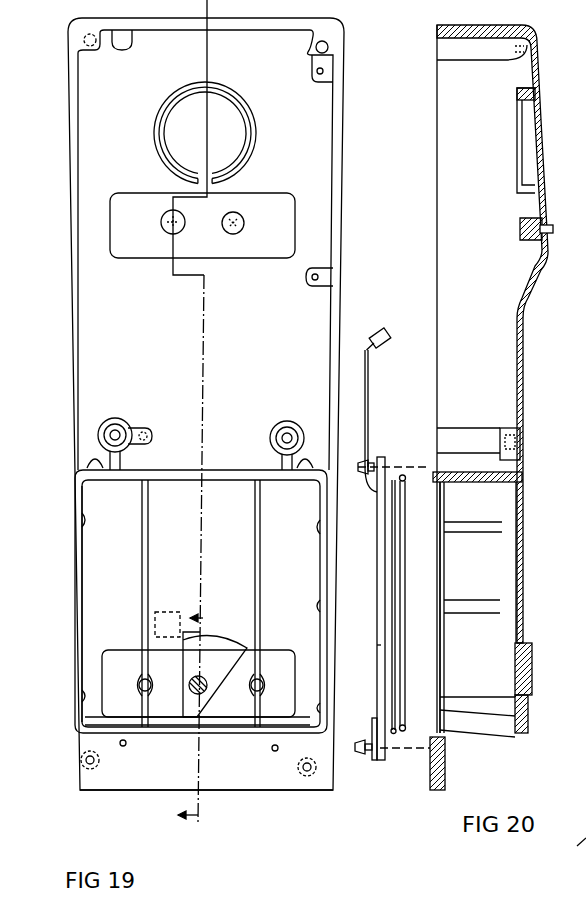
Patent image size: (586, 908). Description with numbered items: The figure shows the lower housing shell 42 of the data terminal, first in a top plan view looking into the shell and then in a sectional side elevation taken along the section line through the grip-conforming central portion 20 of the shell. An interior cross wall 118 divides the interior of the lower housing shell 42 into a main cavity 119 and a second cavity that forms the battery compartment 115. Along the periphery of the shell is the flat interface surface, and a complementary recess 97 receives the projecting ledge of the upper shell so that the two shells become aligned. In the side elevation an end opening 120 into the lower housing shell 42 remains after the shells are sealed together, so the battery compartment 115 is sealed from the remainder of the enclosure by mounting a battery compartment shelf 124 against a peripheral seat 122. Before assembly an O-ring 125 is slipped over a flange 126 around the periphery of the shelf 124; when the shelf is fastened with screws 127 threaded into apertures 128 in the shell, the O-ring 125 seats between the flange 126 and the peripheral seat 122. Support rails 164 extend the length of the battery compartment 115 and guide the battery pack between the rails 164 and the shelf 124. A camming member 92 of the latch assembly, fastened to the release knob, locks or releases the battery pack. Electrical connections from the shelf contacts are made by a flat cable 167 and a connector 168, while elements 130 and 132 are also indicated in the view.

In FIG. 19, the lower housing shell 42 is at (341, 222).
In FIG. 20, the lower housing shell 42 is at (545, 200).
In FIG. 19, the main cavity 119 is at (318, 146).
In FIG. 19, the grip-conforming central portion 20 is at (185, 423).
In FIG. 19, the interior cross wall 118 is at (160, 482).
In FIG. 19, the support rails 164 is at (145, 560).
In FIG. 19, the peripheral seat 122 is at (80, 597).
In FIG. 20, the peripheral seat 122 is at (432, 730).
In FIG. 19, the battery compartment 115 is at (107, 610).
In FIG. 20, the battery compartment 115 is at (499, 553).
In FIG. 19, the camming member 92 is at (228, 642).
In FIG. 19, the apertures 128 is at (97, 459).
In FIG. 19, the recess 97 is at (328, 789).
In FIG. 20, the recess 97 is at (437, 792).
In FIG. 20, the end opening 120 is at (477, 740).
In FIG. 20, the flat cable 167 is at (367, 358).
In FIG. 20, the connector 168 is at (386, 330).
In FIG. 20, the battery compartment shelf 124 is at (378, 550).
In FIG. 20, the flange 126 is at (383, 480).
In FIG. 20, the O-ring 125 is at (407, 480).
In FIG. 20, the screws 127 is at (358, 467).
In FIG. 20, the element 132 is at (572, 824).
In FIG. 20, the element 130 is at (571, 858).